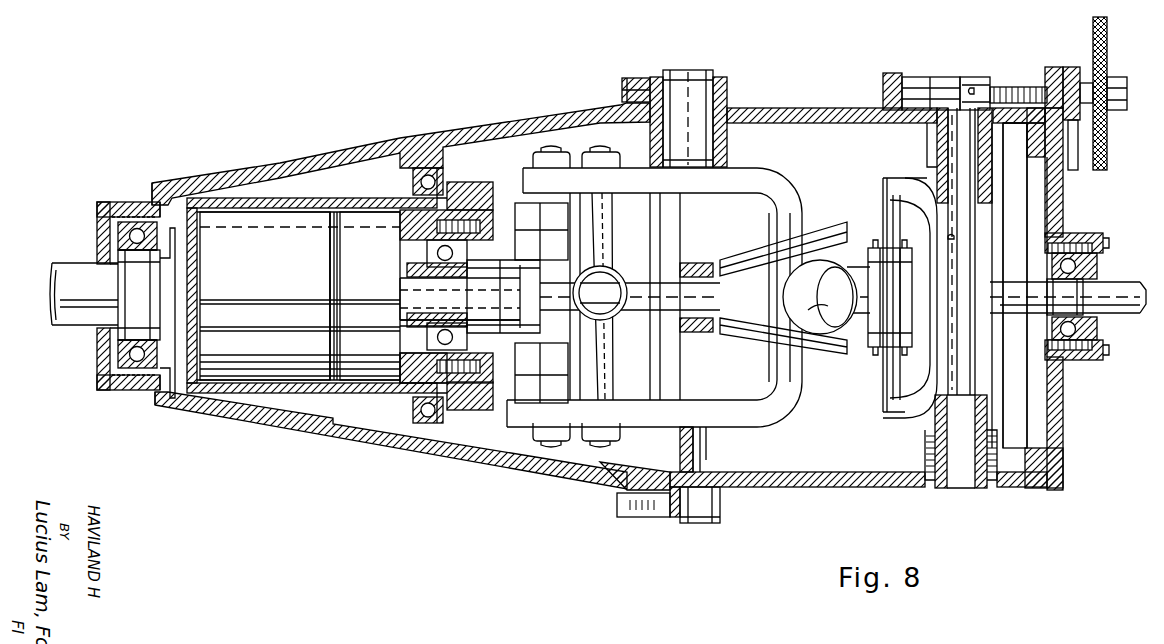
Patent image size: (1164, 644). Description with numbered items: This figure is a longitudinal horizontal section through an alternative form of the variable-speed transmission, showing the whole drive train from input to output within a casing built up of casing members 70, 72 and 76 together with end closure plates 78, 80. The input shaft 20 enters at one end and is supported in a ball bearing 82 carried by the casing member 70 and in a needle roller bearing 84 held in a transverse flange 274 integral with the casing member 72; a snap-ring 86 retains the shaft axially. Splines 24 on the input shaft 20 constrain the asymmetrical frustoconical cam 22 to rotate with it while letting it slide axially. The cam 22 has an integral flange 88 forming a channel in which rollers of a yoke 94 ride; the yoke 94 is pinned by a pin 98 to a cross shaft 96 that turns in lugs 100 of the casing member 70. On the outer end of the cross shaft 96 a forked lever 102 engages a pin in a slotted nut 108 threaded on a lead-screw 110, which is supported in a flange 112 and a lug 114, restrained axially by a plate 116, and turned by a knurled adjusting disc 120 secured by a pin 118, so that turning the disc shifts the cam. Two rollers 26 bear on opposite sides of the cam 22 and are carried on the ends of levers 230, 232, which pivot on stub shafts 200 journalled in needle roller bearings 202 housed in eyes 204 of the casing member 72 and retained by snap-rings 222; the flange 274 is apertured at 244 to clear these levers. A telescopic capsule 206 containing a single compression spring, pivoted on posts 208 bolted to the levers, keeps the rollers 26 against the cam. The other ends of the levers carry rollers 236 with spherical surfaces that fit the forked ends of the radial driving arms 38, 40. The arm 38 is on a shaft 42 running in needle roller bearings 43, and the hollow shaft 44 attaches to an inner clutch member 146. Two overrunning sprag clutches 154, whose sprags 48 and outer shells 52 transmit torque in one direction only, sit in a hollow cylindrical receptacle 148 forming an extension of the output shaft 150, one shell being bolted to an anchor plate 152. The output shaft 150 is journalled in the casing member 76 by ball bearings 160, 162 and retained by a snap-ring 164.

The input shaft 20 is at (1110, 315).
The asymmetrical frustoconical cam 22 is at (774, 345).
The splines 24 is at (989, 320).
The rollers 26 is at (814, 270).
The radial driving arm 38 is at (501, 412).
The radial driving arm 40 is at (516, 210).
The shaft 42 is at (400, 290).
The needle roller bearings 43 is at (511, 256).
The hollow shaft 44 is at (498, 271).
The sprags or pawls 48 is at (406, 334).
The outer cylindrical shell 52 is at (342, 206).
The casing member 70 is at (1062, 414).
The casing member 72 is at (824, 112).
The casing member 76 is at (292, 162).
The end closure plate 78 is at (1086, 232).
The end closure plate 80 is at (109, 201).
The ball bearing 82 is at (1074, 263).
The needle roller bearing 84 is at (696, 264).
The snap-ring 86 is at (1082, 284).
The integral flange 88 is at (886, 362).
The yoke 94 is at (958, 218).
The cross shaft 96 is at (966, 188).
The pin 98 is at (956, 237).
The lugs 100 is at (938, 178).
The forked lever 102 is at (956, 72).
The slotted nut 108 is at (917, 72).
The lead-screw 110 is at (1002, 87).
The flange 112 is at (886, 72).
The lug 114 is at (1052, 66).
The plate 116 is at (1076, 68).
The pin 118 is at (1110, 84).
The knurled adjusting disc 120 is at (1106, 50).
The inner clutch member 146 is at (400, 320).
The hollow cylindrical receptacle 148 is at (248, 200).
The output shaft 150 is at (98, 270).
The anchor plate 152 is at (486, 173).
The overrunning sprag clutch 154 is at (263, 264).
The ball bearing 160 is at (118, 232).
The ball bearing 162 is at (413, 182).
The snap-ring 164 is at (146, 313).
The stub shaft 200 is at (680, 68).
The needle roller bearings 202 is at (728, 100).
The eyes 204 is at (648, 141).
The telescopic capsule 206 is at (607, 320).
The posts 208 is at (608, 247).
The snap-rings 222 is at (670, 78).
The lever 230 is at (808, 418).
The lever 232 is at (738, 172).
The rollers 236 is at (547, 180).
The aperture 244 is at (710, 218).
The transverse flange 274 is at (718, 442).